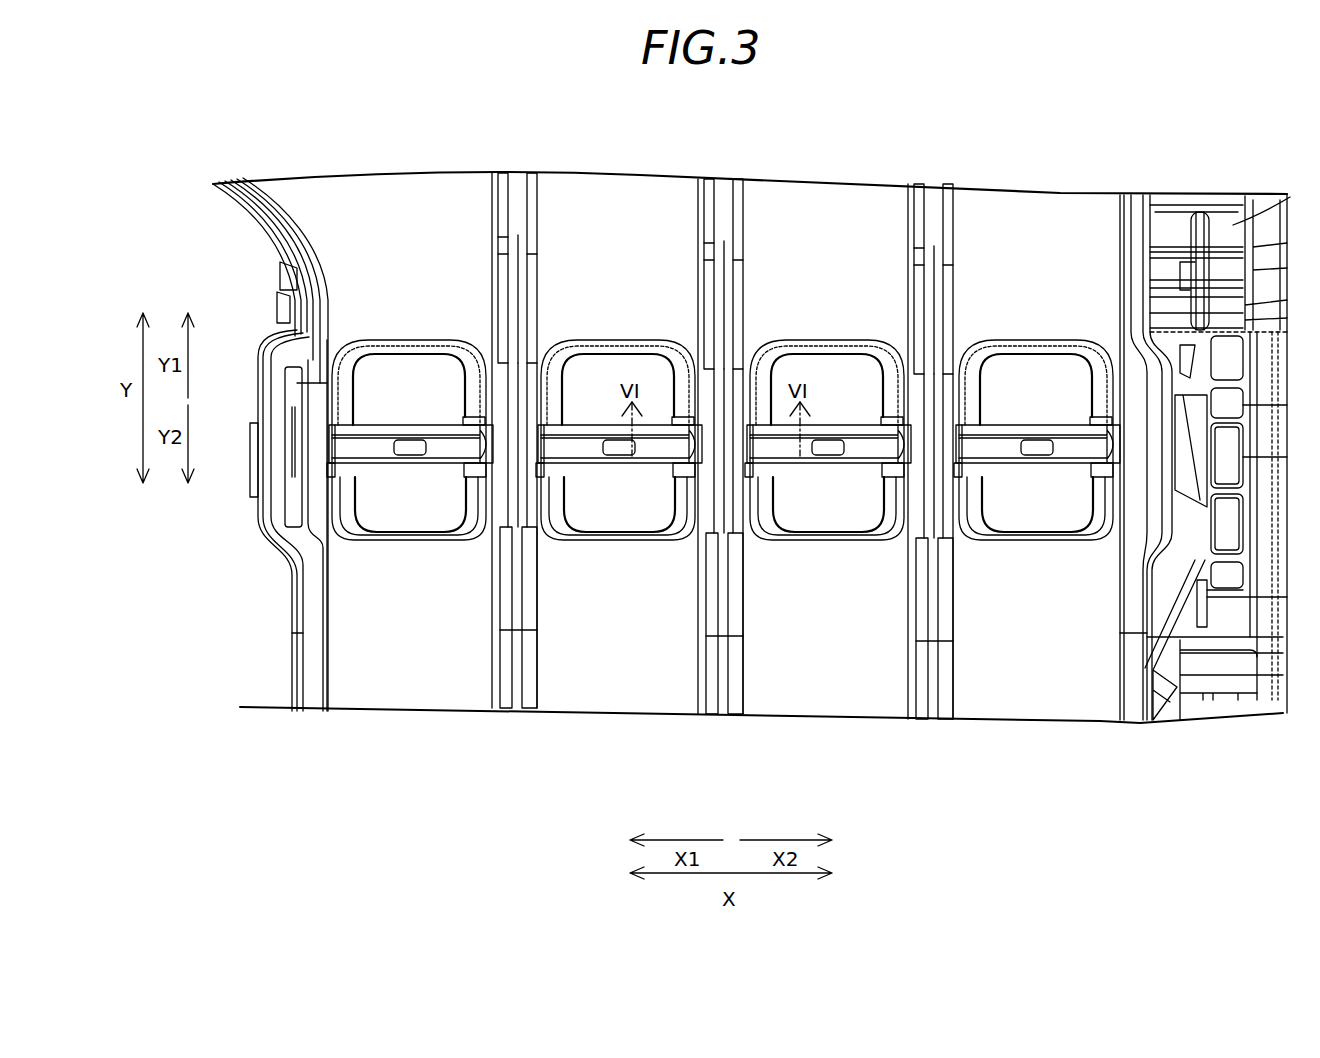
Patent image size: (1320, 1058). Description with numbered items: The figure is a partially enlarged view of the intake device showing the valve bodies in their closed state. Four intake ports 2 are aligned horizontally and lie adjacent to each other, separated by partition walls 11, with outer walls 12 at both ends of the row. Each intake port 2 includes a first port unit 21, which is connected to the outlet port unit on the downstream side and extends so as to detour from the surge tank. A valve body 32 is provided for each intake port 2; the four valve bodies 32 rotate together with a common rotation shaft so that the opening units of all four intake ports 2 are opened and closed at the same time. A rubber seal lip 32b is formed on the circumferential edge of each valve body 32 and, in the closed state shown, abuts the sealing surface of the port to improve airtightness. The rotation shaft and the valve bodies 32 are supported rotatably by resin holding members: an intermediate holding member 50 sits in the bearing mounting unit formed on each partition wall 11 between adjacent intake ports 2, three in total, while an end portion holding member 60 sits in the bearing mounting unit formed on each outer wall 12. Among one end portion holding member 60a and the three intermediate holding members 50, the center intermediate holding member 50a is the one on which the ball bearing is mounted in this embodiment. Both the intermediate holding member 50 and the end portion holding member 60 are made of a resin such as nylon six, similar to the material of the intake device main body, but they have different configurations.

The intake port 2 is at (750, 447).
The partition wall 11 is at (537, 195).
The outer wall 12 is at (324, 345).
The first port unit 21 is at (403, 208).
The valve body 32 is at (410, 517).
The seal lip 32b is at (350, 507).
The intermediate holding member 50 is at (510, 425).
The intermediate holding member 50a is at (717, 425).
The end portion holding member 60 is at (692, 407).
The end portion holding member 60a is at (311, 413).